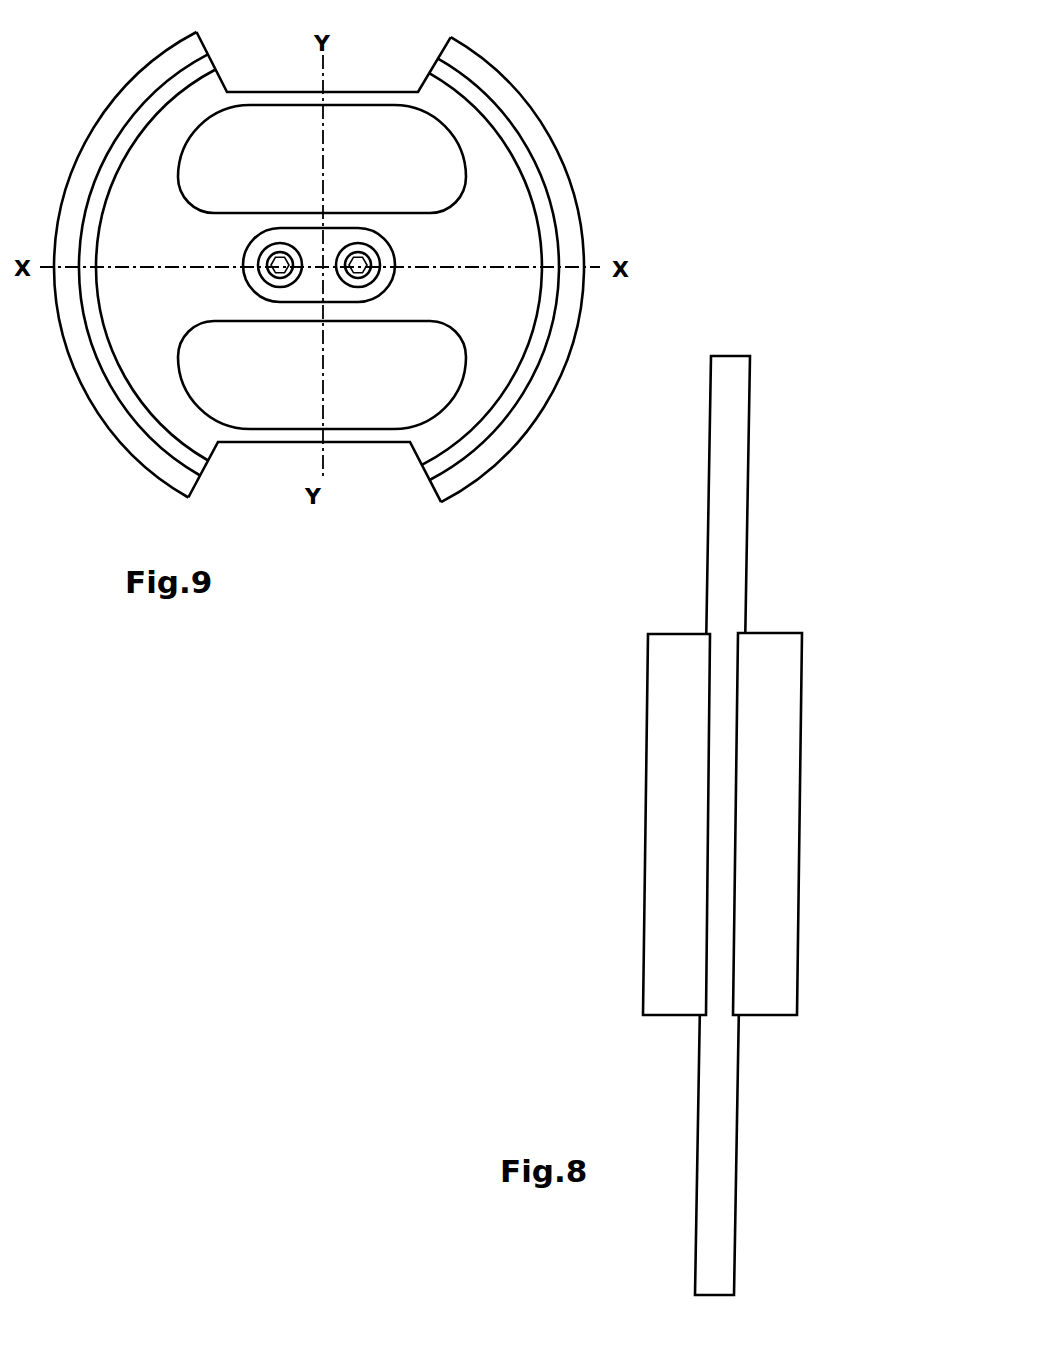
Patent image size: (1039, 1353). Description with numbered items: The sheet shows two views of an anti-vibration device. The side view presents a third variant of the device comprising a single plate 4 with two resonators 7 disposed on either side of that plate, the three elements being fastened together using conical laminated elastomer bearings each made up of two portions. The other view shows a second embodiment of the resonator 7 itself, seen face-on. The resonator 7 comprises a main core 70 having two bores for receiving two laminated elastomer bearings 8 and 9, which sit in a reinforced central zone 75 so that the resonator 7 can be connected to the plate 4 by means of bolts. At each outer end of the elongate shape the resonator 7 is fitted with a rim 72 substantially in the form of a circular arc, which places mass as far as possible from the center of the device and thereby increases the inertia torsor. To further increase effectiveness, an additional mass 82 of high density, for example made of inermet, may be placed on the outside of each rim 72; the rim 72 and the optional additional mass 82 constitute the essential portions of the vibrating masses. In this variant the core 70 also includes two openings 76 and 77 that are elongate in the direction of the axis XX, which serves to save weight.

In FIG. 8, the plate 4 is at (706, 575).
In FIG. 9, the resonator 7 is at (482, 479).
In FIG. 8, the resonator 7 is at (648, 882).
In FIG. 9, the laminated elastomer bearing 8 is at (285, 285).
In FIG. 9, the laminated elastomer bearing 9 is at (368, 277).
In FIG. 9, the main core 70 is at (518, 322).
In FIG. 9, the rim 72 is at (443, 70).
In FIG. 9, the reinforced central zone 75 is at (393, 240).
In FIG. 9, the opening 76 is at (287, 152).
In FIG. 9, the opening 77 is at (288, 385).
In FIG. 9, the additional mass 82 is at (463, 53).